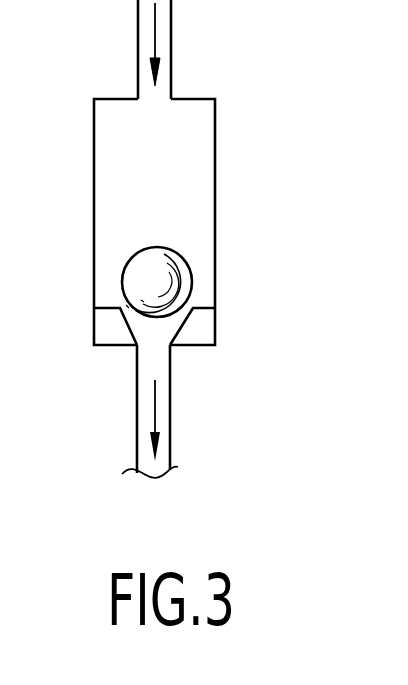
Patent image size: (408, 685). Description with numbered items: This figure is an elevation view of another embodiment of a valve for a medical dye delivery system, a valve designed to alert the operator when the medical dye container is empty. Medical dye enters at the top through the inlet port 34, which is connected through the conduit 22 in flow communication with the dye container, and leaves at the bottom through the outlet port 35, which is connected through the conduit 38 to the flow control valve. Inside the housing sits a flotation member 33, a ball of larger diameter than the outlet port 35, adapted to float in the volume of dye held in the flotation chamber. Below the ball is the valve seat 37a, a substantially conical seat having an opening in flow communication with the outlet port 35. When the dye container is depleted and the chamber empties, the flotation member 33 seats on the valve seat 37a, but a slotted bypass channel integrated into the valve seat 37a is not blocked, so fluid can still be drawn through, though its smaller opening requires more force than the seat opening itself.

The conduit 22 is at (172, 43).
The inlet port 34 is at (118, 98).
The flotation member 33 is at (192, 282).
The valve seat 37a is at (182, 325).
The outlet port 35 is at (172, 360).
The conduit 38 is at (172, 437).